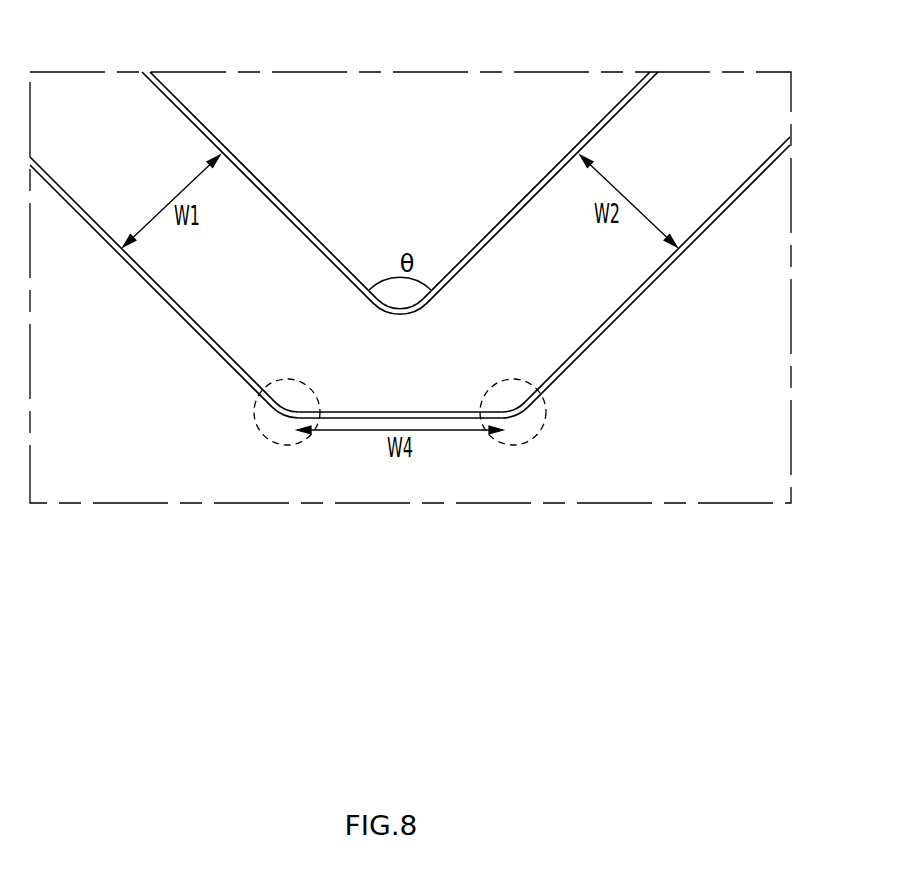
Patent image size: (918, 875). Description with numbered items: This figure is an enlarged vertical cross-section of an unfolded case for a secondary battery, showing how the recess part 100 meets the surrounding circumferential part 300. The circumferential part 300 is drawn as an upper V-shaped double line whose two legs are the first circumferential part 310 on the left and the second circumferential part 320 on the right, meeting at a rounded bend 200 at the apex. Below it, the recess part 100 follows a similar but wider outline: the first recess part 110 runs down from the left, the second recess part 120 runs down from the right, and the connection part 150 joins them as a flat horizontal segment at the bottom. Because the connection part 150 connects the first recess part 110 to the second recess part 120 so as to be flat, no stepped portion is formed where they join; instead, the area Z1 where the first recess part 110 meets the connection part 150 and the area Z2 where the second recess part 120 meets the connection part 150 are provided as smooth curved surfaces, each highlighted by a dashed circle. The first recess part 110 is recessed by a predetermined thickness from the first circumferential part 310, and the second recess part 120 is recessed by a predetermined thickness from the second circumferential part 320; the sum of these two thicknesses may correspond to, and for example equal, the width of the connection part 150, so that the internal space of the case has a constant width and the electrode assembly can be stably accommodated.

The recess part 100 is at (410, 421).
The first recess part 110 is at (155, 291).
The second recess part 120 is at (645, 291).
The connection part 150 is at (399, 409).
The bent apex portion 200 is at (399, 307).
The circumferential part 300 is at (451, 341).
The first circumferential part 310 is at (255, 183).
The second circumferential part 320 is at (550, 181).
The area on which the first recess part and the connection part are connected Z1 is at (258, 428).
The area on which the second recess part and the connection part are connected Z2 is at (542, 428).